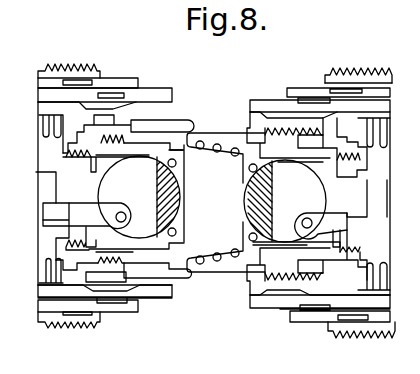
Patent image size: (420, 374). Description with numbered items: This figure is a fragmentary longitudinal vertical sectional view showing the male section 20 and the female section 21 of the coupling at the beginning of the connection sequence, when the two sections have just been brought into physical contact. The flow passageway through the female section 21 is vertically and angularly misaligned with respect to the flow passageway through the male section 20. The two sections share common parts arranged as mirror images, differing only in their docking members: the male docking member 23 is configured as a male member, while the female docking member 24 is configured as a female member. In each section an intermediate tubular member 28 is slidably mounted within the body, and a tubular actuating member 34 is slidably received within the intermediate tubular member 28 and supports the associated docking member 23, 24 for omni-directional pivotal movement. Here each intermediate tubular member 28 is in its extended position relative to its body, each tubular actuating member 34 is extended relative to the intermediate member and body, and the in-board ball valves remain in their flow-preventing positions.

The male section 20 is at (69, 56).
The female section 21 is at (345, 62).
The intermediate tubular member 28 is at (115, 83).
The tubular actuating member 34 is at (157, 97).
The male docking member 23 is at (183, 289).
The female docking member 24 is at (232, 284).